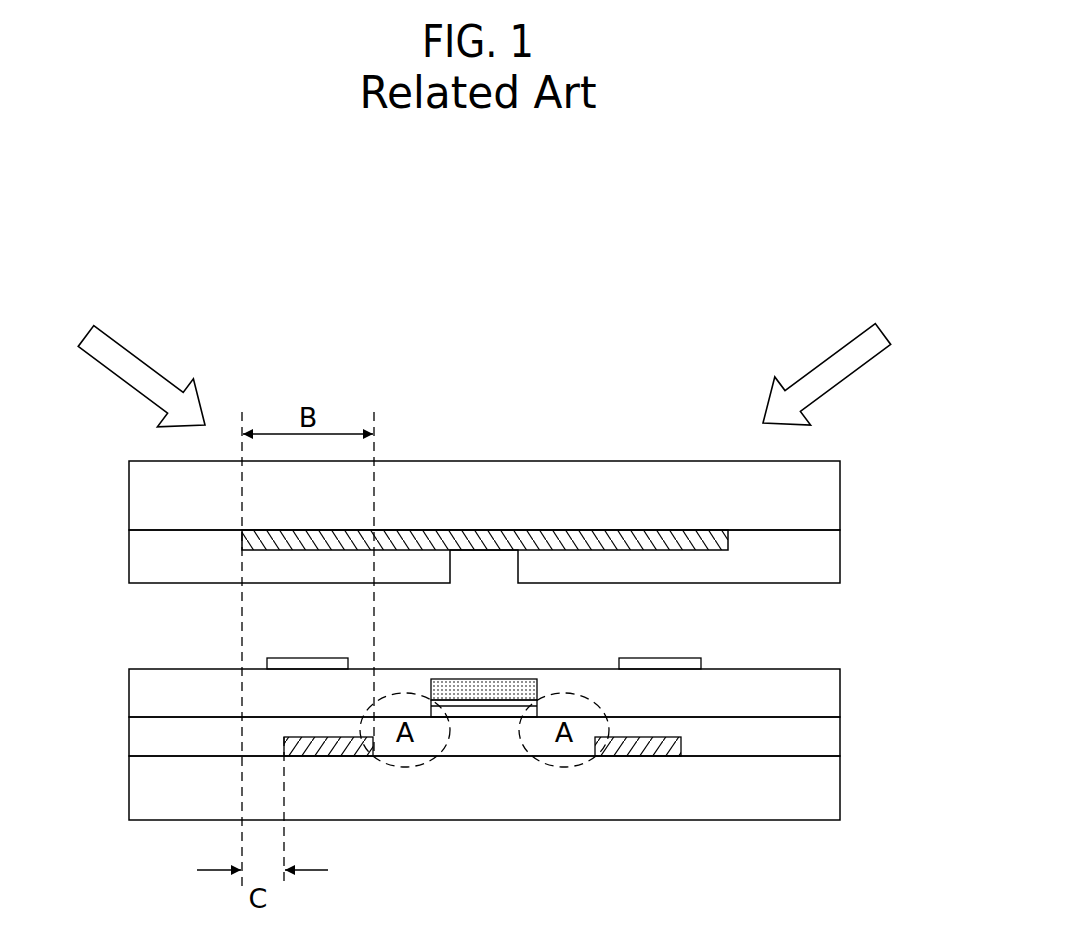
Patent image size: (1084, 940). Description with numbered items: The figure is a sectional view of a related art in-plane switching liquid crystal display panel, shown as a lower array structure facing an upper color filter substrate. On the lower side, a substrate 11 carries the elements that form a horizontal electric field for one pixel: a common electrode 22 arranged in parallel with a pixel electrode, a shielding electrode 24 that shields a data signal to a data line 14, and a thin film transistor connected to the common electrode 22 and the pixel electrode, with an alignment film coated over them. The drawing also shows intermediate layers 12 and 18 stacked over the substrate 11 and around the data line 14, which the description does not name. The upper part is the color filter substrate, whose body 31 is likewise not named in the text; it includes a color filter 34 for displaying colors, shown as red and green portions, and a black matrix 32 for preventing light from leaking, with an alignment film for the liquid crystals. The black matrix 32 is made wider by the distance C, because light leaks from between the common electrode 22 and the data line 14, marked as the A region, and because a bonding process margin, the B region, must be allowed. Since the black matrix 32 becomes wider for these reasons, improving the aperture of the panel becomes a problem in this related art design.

The substrate 11 is at (823, 798).
The buffer layer 12 is at (823, 737).
The data line 14 is at (474, 680).
The insulating layer 18 is at (823, 693).
The common electrode 22 is at (307, 663).
The shielding electrode 24 is at (343, 750).
The upper substrate 31 is at (520, 480).
The black matrix 32 is at (441, 540).
The color filter 34 is at (826, 561).